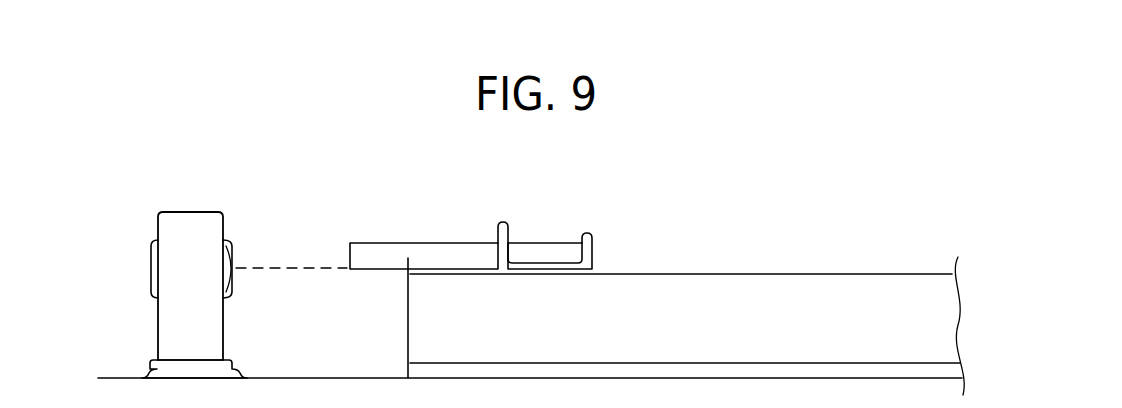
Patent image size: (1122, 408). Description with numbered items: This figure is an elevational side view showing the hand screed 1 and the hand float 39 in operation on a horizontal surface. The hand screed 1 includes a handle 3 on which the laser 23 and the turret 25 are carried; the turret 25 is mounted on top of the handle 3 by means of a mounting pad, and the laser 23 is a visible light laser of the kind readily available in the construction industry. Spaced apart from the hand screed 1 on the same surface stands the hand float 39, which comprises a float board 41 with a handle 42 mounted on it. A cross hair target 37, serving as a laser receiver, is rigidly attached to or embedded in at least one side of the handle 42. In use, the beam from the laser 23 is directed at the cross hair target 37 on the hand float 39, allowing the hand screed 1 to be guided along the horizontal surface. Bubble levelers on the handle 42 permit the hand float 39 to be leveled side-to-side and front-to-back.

The hand screed component 1 is at (392, 287).
The handle 3 is at (727, 305).
The laser 23 is at (458, 243).
The turret 25 is at (592, 233).
The cross hair target 37 is at (234, 257).
The hand float 39 is at (205, 273).
The float board 41 is at (232, 364).
The handle 42 is at (224, 336).